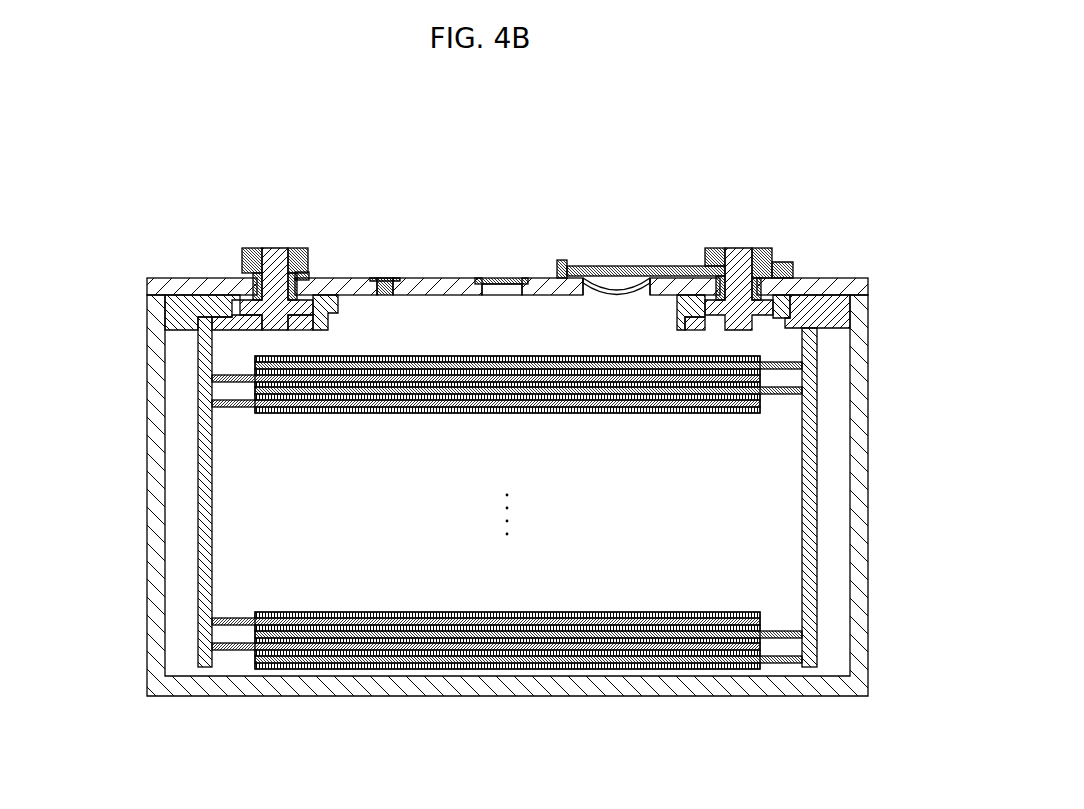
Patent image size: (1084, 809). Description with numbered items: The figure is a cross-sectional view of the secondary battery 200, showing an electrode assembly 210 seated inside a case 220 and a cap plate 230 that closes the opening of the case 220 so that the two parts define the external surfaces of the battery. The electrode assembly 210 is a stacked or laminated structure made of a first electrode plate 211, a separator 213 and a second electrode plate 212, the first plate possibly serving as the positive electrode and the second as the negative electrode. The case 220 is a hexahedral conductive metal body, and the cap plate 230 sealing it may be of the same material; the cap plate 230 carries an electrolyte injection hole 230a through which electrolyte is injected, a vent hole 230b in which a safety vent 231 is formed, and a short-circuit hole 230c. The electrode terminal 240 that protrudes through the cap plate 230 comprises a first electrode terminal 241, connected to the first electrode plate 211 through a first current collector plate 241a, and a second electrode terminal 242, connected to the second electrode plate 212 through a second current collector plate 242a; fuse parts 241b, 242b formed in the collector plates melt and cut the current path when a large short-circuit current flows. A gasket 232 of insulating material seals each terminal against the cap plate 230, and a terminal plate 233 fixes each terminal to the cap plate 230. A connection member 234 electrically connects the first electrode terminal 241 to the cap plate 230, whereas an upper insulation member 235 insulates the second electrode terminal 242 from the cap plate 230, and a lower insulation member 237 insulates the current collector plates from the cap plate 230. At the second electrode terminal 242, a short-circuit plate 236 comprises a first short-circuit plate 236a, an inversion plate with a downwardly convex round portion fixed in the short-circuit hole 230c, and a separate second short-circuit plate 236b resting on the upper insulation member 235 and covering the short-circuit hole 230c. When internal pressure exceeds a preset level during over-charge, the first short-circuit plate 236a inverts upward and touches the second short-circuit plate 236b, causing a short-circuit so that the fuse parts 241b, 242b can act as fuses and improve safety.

The secondary battery 200 is at (90, 152).
The electrode assembly 210 is at (412, 674).
The first electrode plate 211 is at (334, 660).
The second electrode plate 212 is at (640, 660).
The separator 213 is at (545, 660).
The case 220 is at (148, 390).
The cap plate 230 is at (430, 278).
The electrolyte injection hole 230a is at (386, 297).
The vent hole 230b is at (500, 297).
The short-circuit hole 230c is at (596, 297).
The safety vent 231 is at (486, 278).
The gasket 232 is at (304, 279).
The terminal plate 233 is at (300, 247).
The connection member 234 is at (243, 277).
The upper insulation member 235 is at (560, 262).
The short-circuit plate 236 is at (690, 203).
The first short-circuit plate 236a is at (612, 267).
The second short-circuit plate 236b is at (676, 265).
The lower insulation member 237 is at (170, 310).
The electrode terminal 240 is at (753, 158).
The first electrode terminal 241 is at (264, 246).
The first current collector plate 241a is at (205, 510).
The fuse part 241b is at (232, 313).
The second electrode terminal 242 is at (738, 247).
The second current collector plate 242a is at (820, 527).
The fuse part 242b is at (786, 318).